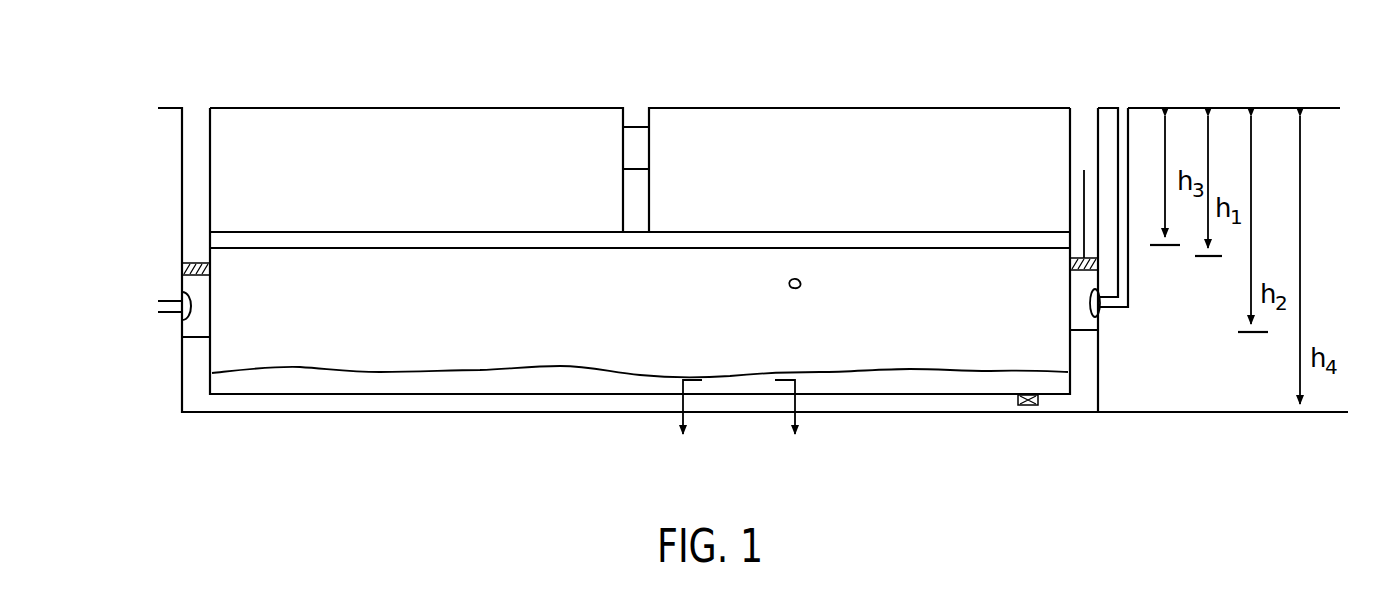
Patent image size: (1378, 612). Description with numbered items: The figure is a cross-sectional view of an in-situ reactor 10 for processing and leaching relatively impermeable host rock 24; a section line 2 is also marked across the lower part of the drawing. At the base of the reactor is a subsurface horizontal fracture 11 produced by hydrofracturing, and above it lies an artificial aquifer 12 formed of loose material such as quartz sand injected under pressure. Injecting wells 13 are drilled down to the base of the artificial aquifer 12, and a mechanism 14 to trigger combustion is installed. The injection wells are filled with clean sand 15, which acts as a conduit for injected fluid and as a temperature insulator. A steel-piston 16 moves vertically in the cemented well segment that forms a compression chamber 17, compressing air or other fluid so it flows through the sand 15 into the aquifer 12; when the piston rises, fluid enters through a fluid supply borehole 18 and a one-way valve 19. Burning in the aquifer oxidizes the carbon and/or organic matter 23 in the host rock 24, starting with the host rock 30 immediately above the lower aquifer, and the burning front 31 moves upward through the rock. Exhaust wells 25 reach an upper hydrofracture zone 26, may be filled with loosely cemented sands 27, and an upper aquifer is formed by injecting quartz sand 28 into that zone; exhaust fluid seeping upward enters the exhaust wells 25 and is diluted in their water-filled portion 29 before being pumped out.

The section line 2- 2 is at (740, 433).
The in-situ reactor 10 is at (290, 413).
The subsurface horizontal fracture 11 is at (590, 412).
The artificial aquifer 12 is at (503, 402).
The injecting wells 13 is at (193, 125).
The mechanism to trigger combustion 14 is at (1025, 408).
The clean sand 15 is at (1090, 352).
The steel-piston 16 is at (1052, 270).
The compression chamber 17 is at (1078, 308).
The fluid supply borehole 18 is at (1125, 108).
The one-way valve 19 is at (1100, 308).
The carbon and/or organic matter 23 is at (789, 285).
The host rock 24 is at (346, 198).
The exhaust wells 25 is at (637, 112).
The upper hydrofracture zone 26 is at (830, 245).
The loosely cemented sands 27 is at (637, 185).
The quartz sand 28 is at (900, 248).
The water-filled portion 29 is at (636, 146).
The host rock immediately above lower injection aquifer 30 is at (376, 382).
The burning front 31 is at (620, 364).